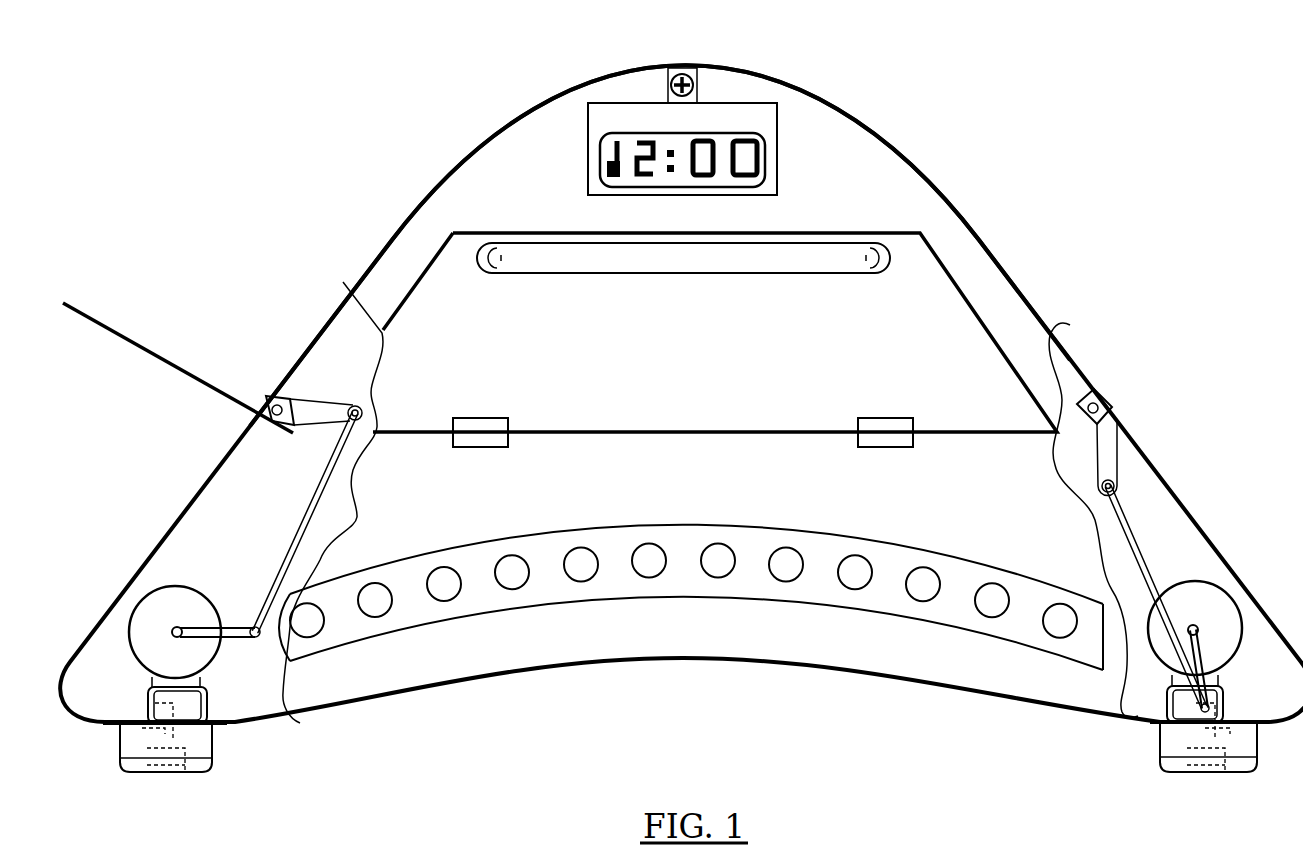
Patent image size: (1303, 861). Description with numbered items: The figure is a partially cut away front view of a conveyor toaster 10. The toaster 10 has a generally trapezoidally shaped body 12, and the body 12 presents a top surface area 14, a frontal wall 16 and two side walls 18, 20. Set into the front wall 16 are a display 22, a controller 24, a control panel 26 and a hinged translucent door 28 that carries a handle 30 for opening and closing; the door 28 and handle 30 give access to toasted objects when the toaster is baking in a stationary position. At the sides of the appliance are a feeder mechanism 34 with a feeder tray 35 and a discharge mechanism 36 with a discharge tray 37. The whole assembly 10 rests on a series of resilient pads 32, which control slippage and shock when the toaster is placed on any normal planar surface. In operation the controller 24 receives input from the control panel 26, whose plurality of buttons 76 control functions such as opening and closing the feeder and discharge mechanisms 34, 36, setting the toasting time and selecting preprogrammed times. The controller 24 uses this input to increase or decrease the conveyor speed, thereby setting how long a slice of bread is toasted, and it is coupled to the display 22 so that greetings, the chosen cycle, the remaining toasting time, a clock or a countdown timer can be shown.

The conveyor toaster 10 is at (1006, 170).
The body 12 is at (978, 237).
The top surface area 14 is at (712, 68).
The frontal wall 16 is at (870, 178).
The side wall 18 is at (1037, 307).
The side wall 20 is at (416, 208).
The display 22 is at (768, 148).
The controller 24 is at (768, 110).
The control panel 26 is at (1073, 643).
The hinged translucent door 28 is at (715, 340).
The handle 30 is at (790, 270).
The resilient pads 32 is at (208, 750).
The feeder mechanism 34 is at (232, 528).
The feeder tray 35 is at (136, 340).
The discharge mechanism 36 is at (1185, 555).
The discharge tray 37 is at (1010, 276).
The buttons 76 is at (381, 604).